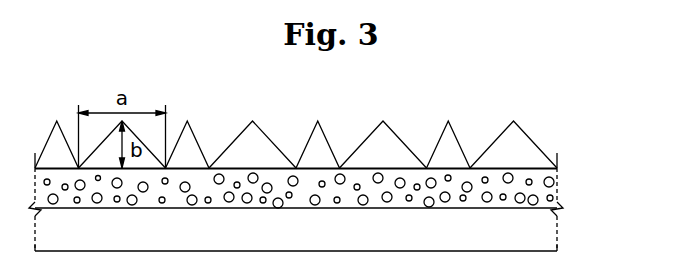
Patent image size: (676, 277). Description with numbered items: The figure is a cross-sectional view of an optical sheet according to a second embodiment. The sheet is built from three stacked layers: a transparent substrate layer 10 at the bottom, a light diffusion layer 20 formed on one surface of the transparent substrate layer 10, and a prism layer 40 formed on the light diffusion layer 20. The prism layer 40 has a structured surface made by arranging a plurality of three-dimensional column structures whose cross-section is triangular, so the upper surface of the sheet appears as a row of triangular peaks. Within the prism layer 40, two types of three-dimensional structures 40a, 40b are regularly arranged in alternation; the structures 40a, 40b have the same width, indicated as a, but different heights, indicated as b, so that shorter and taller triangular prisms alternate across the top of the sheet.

The transparent substrate layer 10 is at (553, 233).
The light diffusion layer 20 is at (552, 190).
The prism layer 40 is at (336, 121).
The 3D structure 40a is at (450, 142).
The 3D structure 40b is at (523, 135).